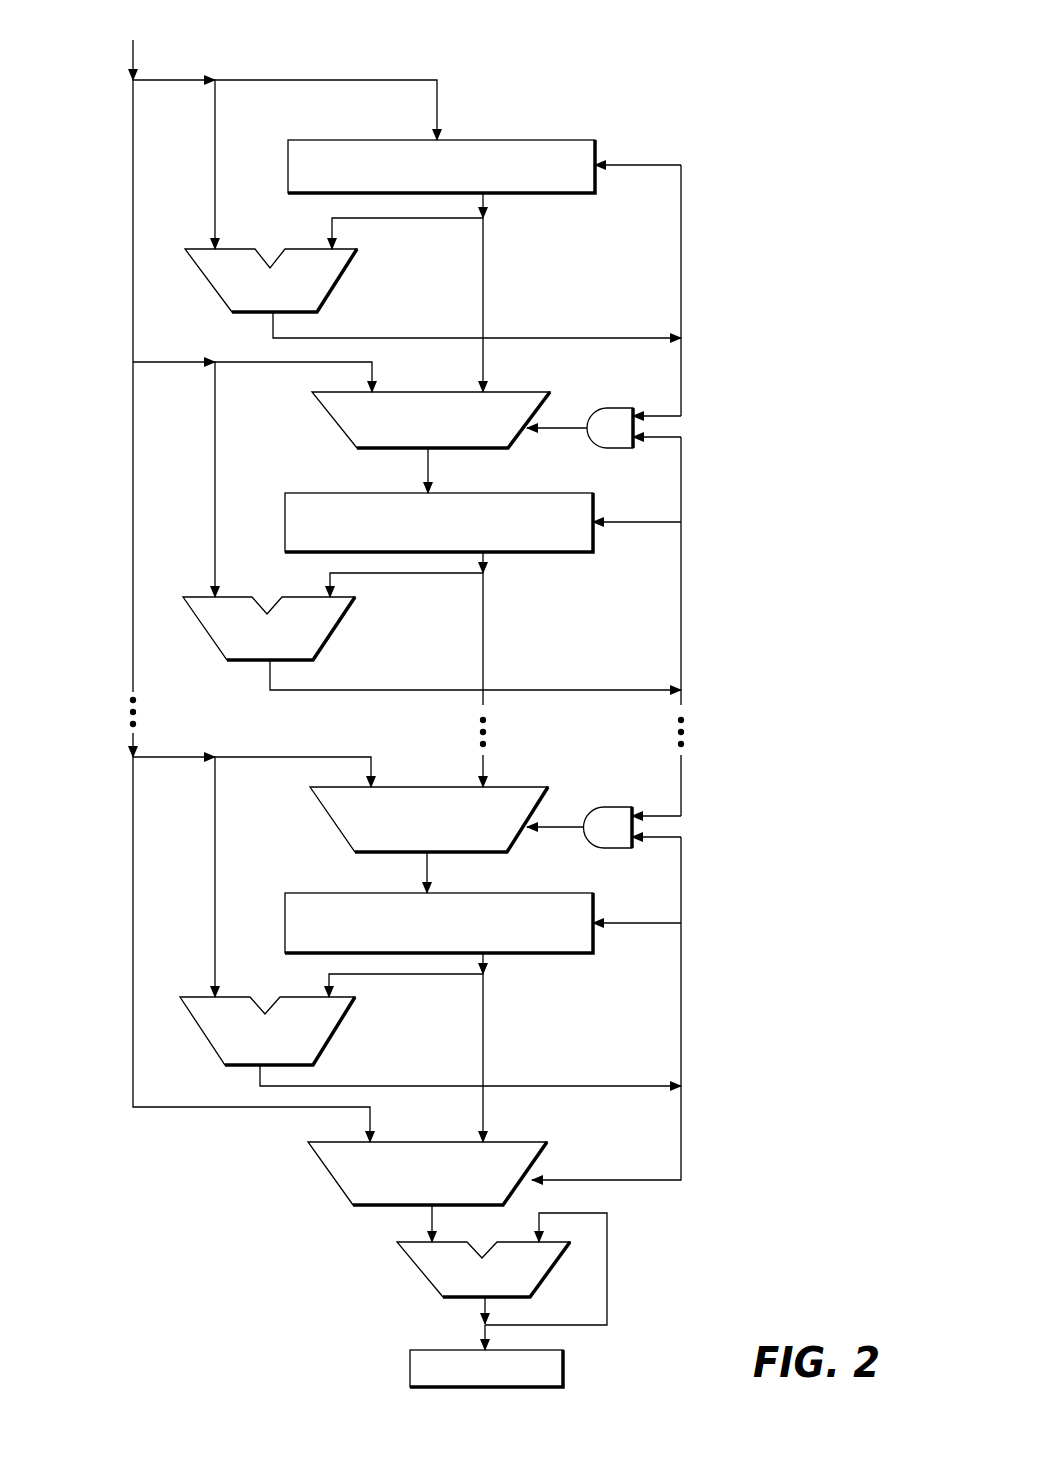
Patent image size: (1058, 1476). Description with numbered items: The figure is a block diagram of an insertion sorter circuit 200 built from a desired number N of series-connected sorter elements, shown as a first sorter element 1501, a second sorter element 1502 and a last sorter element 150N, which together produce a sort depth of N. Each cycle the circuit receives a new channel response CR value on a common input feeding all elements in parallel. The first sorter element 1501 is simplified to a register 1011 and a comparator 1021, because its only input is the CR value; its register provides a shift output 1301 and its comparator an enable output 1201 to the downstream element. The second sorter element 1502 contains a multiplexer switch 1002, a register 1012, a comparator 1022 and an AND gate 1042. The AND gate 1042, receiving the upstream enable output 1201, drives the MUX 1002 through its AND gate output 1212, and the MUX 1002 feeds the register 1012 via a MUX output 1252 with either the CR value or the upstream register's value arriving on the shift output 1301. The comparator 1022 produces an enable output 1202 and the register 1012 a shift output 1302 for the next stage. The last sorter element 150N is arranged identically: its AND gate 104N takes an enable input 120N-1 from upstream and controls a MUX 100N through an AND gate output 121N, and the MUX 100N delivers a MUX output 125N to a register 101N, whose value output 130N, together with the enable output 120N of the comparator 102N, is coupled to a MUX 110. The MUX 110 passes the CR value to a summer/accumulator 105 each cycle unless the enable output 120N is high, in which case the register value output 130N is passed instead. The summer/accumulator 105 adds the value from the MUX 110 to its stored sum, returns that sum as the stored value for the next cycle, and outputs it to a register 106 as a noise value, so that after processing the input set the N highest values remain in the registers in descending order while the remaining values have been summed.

The sorter circuit 200 is at (835, 92).
The first sorter element 1501 is at (118, 195).
The second sorter element 1502 is at (118, 545).
The last sorter element 150N is at (118, 865).
The register 1011 is at (331, 140).
The register 1012 is at (322, 493).
The register 101N is at (322, 893).
The comparator 1021 is at (190, 249).
The comparator 1022 is at (190, 597).
The comparator 102N is at (190, 997).
The shift output 1301 is at (483, 268).
The shift output 1302 is at (483, 607).
The register value output 130N is at (483, 1035).
The enable output 1201 is at (550, 338).
The enable output 1202 is at (550, 690).
The enable input 120N-1 is at (681, 780).
The enable output 120N is at (553, 1086).
The multiplexer switch 1002 is at (412, 392).
The multiplexer switch 100N is at (412, 787).
The AND gate output 1212 is at (558, 422).
The AND gate output 121N is at (558, 822).
The MUX output 1252 is at (432, 466).
The MUX output 125N is at (432, 868).
The AND gate 1042 is at (630, 450).
The AND gate 104N is at (630, 850).
The MUX 110 is at (333, 1176).
The summer/accumulator 105 is at (415, 1273).
The register 106 is at (410, 1362).